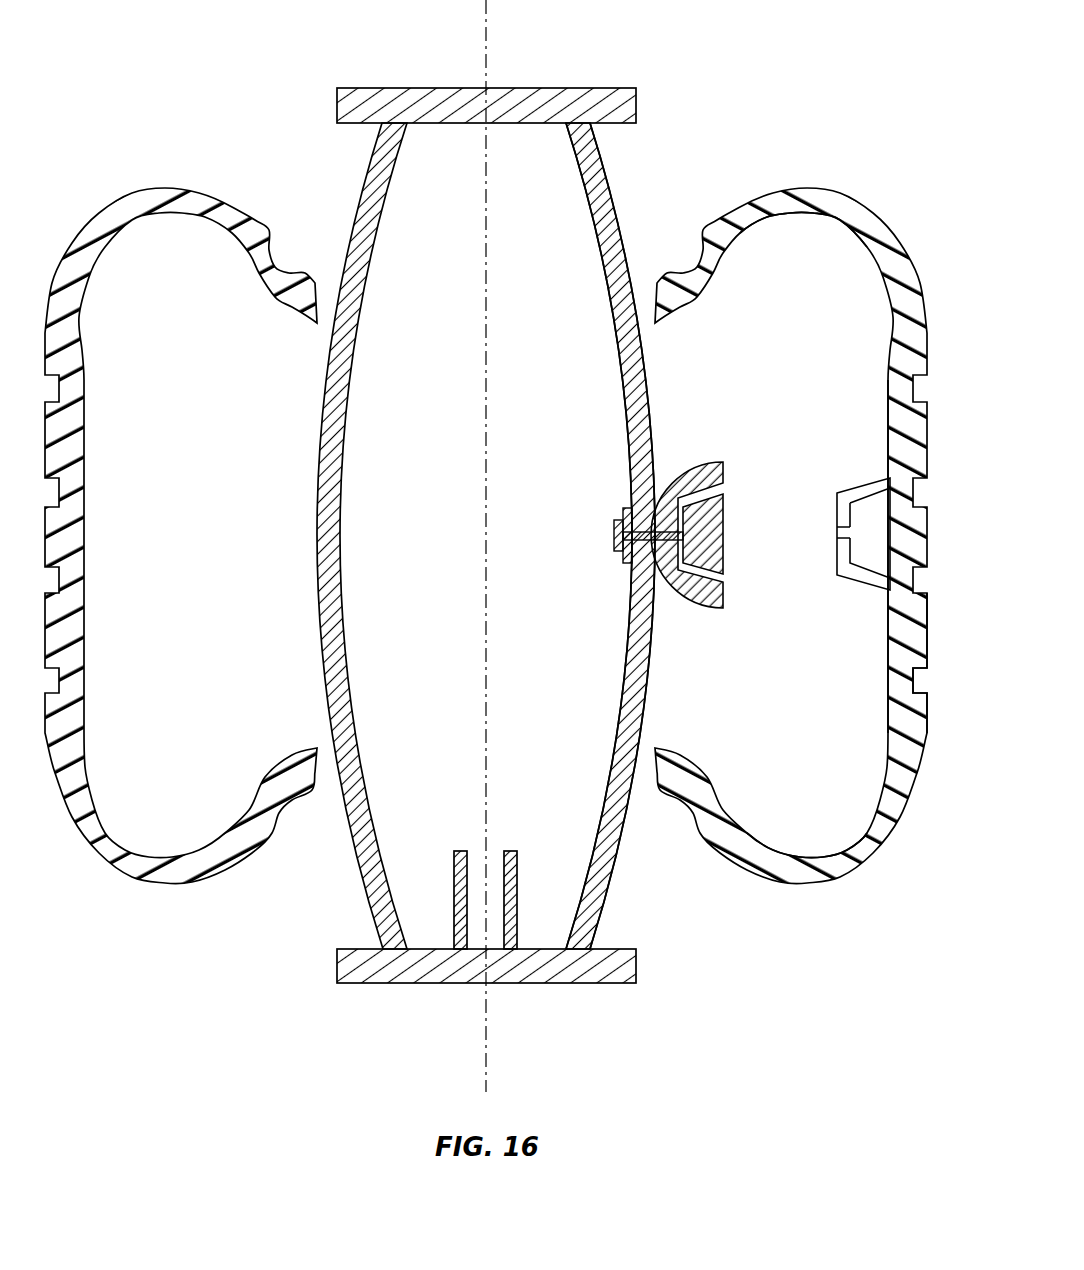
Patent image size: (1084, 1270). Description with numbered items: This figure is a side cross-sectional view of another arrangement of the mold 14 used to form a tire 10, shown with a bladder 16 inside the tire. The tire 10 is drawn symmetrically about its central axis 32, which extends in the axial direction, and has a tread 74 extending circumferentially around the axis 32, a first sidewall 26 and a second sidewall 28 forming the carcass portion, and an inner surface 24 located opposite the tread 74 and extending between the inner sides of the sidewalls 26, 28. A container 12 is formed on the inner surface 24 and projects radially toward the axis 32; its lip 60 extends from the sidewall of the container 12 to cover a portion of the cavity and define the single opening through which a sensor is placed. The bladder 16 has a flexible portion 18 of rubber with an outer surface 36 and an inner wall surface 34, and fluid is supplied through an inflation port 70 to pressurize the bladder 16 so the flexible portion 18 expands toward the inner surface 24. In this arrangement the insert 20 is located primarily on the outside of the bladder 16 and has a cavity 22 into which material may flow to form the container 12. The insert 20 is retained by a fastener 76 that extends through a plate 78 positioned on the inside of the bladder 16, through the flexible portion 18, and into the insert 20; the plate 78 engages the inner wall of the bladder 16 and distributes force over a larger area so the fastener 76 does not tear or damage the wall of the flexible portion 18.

The tire 10 is at (812, 190).
The container 12 is at (834, 523).
The mold 14 is at (668, 128).
The bladder 16 is at (341, 535).
The flexible portion 18 is at (620, 333).
The insert 20 is at (718, 530).
The cavity 22 is at (717, 580).
The inner surface 24 is at (885, 401).
The sidewall 26 is at (813, 214).
The sidewall 28 is at (812, 857).
The axis 32 is at (486, 35).
The inner wall surface 34 is at (604, 290).
The outer surface 36 is at (626, 228).
The lip 60 is at (838, 560).
The inflation port 70 is at (516, 885).
The tread 74 is at (928, 632).
The fastener 76 is at (615, 532).
The plate 78 is at (626, 555).